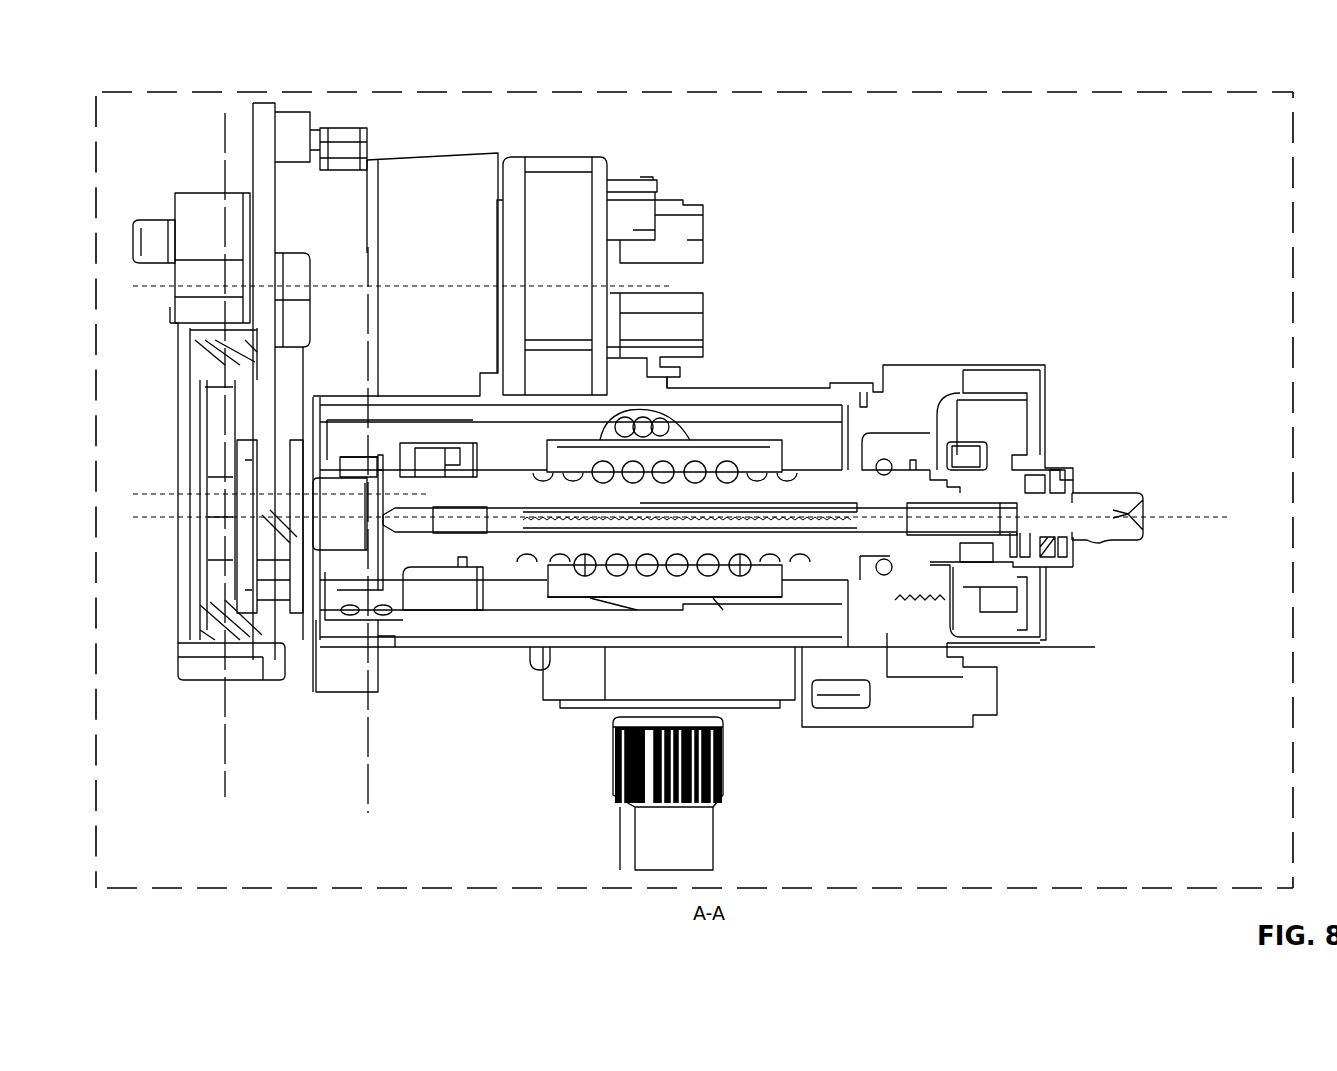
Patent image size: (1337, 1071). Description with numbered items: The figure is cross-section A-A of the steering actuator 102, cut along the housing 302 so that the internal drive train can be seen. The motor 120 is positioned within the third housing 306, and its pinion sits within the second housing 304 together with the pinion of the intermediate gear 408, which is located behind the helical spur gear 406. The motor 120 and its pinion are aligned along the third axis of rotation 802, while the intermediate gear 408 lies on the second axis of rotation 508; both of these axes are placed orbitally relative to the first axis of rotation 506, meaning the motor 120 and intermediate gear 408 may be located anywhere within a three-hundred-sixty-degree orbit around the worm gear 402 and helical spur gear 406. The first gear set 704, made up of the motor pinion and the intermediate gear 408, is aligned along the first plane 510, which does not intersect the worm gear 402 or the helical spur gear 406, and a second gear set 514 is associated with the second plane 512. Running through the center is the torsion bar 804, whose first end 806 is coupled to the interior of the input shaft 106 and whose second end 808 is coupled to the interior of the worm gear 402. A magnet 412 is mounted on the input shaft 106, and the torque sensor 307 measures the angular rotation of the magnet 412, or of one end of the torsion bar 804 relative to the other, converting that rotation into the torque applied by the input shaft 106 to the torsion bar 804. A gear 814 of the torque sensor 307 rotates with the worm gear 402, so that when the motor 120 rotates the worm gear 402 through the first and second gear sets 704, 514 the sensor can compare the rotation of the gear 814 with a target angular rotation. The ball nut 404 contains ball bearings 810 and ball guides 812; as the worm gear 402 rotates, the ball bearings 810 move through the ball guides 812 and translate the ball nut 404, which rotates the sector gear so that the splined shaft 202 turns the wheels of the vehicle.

The steering actuator 102 is at (1250, 58).
The input shaft 106 is at (1100, 493).
The motor 120 is at (415, 203).
The splined shaft 202 is at (720, 775).
The gearbox housing 302 is at (757, 388).
The second housing 304 is at (183, 405).
The third housing 306 is at (518, 157).
The torque sensor 307 is at (1010, 392).
The worm gear 402 is at (472, 585).
The ball nut 404 is at (590, 610).
The helical spur gear 406 is at (395, 448).
The intermediate gear 408 is at (195, 612).
The magnet 412 is at (908, 560).
The first axis of rotation 506 is at (1190, 517).
The second axis of rotation 508 is at (155, 495).
The first plane 510 is at (225, 750).
The second plane 512 is at (368, 762).
The second gear set 514 is at (368, 628).
The first gear set 704 is at (213, 645).
The third axis of rotation 802 is at (470, 290).
The torsion bar 804 is at (703, 517).
The first end 806 is at (1005, 505).
The second end 808 is at (495, 510).
The ball bearings 810 is at (630, 565).
The ball guides 812 is at (755, 565).
The gear 814 is at (943, 457).